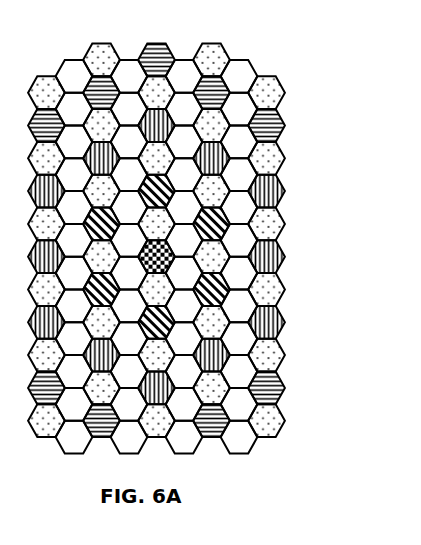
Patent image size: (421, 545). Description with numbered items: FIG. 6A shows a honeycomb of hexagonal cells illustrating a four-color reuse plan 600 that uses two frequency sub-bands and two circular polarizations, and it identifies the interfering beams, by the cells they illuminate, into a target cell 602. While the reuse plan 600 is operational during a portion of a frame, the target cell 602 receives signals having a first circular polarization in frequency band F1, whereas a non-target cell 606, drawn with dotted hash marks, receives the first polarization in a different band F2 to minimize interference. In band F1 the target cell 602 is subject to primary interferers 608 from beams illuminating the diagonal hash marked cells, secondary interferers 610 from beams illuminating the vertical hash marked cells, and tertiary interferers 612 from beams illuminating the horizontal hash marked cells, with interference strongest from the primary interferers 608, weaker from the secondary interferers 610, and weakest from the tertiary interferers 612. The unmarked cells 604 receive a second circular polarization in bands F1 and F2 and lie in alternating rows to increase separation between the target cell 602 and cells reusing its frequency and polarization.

The 4-color reuse plan 600 is at (214, 249).
The target cell 602 is at (169, 259).
The cells 604 is at (181, 309).
The non-target cell 606 is at (239, 403).
The primary interferers 608 is at (168, 326).
The secondary interferers 610 is at (240, 366).
The tertiary interferers 612 is at (270, 418).